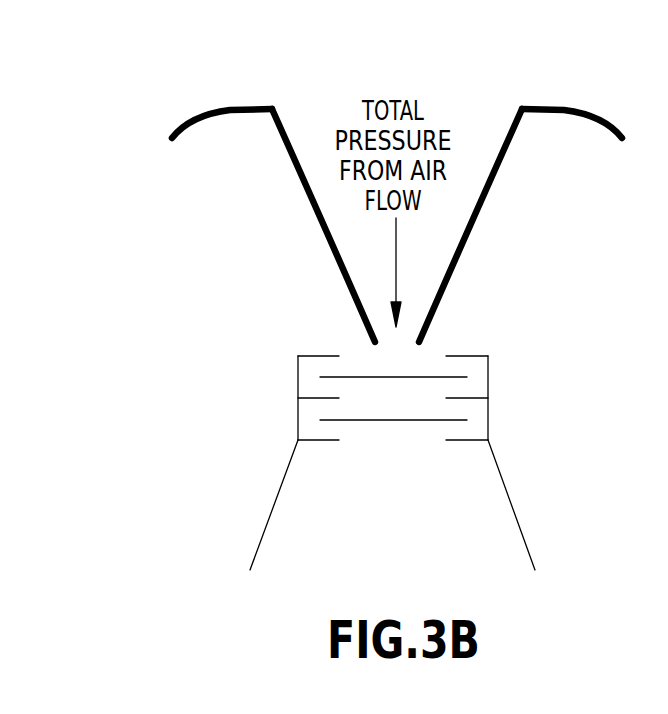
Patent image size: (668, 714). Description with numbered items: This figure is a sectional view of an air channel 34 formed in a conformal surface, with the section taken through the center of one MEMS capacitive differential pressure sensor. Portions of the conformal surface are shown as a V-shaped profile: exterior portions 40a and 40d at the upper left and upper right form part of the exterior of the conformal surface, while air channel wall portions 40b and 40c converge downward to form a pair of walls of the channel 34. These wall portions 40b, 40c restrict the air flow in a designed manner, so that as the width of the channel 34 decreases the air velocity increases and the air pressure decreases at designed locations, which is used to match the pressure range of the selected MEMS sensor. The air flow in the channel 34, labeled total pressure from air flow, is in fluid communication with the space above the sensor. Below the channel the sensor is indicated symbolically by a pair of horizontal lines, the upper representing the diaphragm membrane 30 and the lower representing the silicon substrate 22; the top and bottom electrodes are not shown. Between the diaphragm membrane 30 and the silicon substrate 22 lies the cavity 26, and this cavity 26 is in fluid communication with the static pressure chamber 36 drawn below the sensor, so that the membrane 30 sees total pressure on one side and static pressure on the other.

The air channel 34 is at (453, 77).
The exterior portion of conformal surface 40a is at (228, 108).
The air channel wall portion 40b is at (307, 212).
The air channel wall portion 40c is at (477, 247).
The exterior portion of conformal surface 40d is at (548, 108).
The diaphragm membrane 30 is at (357, 375).
The cavity 26 is at (432, 391).
The silicon substrate 22 is at (418, 420).
The static pressure chamber 36 is at (308, 500).